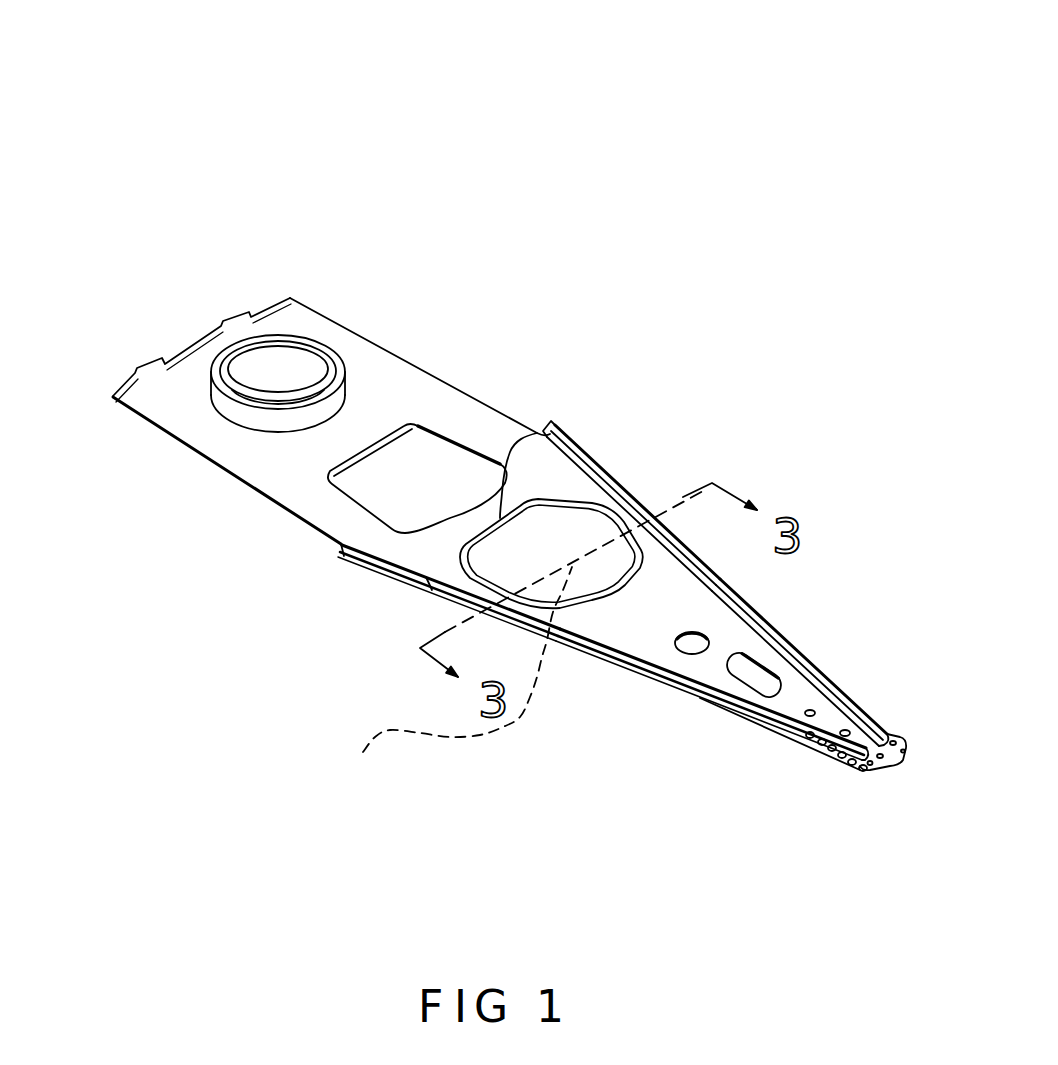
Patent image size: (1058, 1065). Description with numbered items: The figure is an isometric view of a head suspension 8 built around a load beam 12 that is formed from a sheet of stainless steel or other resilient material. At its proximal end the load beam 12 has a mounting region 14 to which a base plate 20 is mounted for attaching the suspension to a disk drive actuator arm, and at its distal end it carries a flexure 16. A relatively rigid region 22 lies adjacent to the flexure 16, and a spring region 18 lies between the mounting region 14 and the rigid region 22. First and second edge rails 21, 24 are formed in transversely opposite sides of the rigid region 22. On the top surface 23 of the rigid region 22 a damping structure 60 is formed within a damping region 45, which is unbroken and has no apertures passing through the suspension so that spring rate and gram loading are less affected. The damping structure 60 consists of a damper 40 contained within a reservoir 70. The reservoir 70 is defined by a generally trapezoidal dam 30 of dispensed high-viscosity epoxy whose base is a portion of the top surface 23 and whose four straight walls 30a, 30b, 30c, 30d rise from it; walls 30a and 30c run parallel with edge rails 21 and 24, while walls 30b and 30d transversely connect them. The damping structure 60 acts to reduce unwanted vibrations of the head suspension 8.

The head suspension 8 is at (517, 273).
The load beam 12 is at (349, 559).
The mounting region 14 is at (308, 307).
The flexure 16 is at (910, 740).
The spring region 18 is at (480, 400).
The base plate 20 is at (143, 425).
The first edge rail 21 is at (703, 690).
The rigid region 22 is at (600, 635).
The top surface 23 is at (355, 537).
The second edge rail 24 is at (760, 610).
The dam 30 is at (457, 558).
The straight wall 30a is at (452, 573).
The straight wall 30b is at (552, 423).
The straight wall 30c is at (637, 502).
The straight wall 30d is at (548, 632).
The damper 40 is at (587, 477).
The damping region 45 is at (444, 676).
The damping structure 60 is at (560, 497).
The reservoir 70 is at (427, 577).